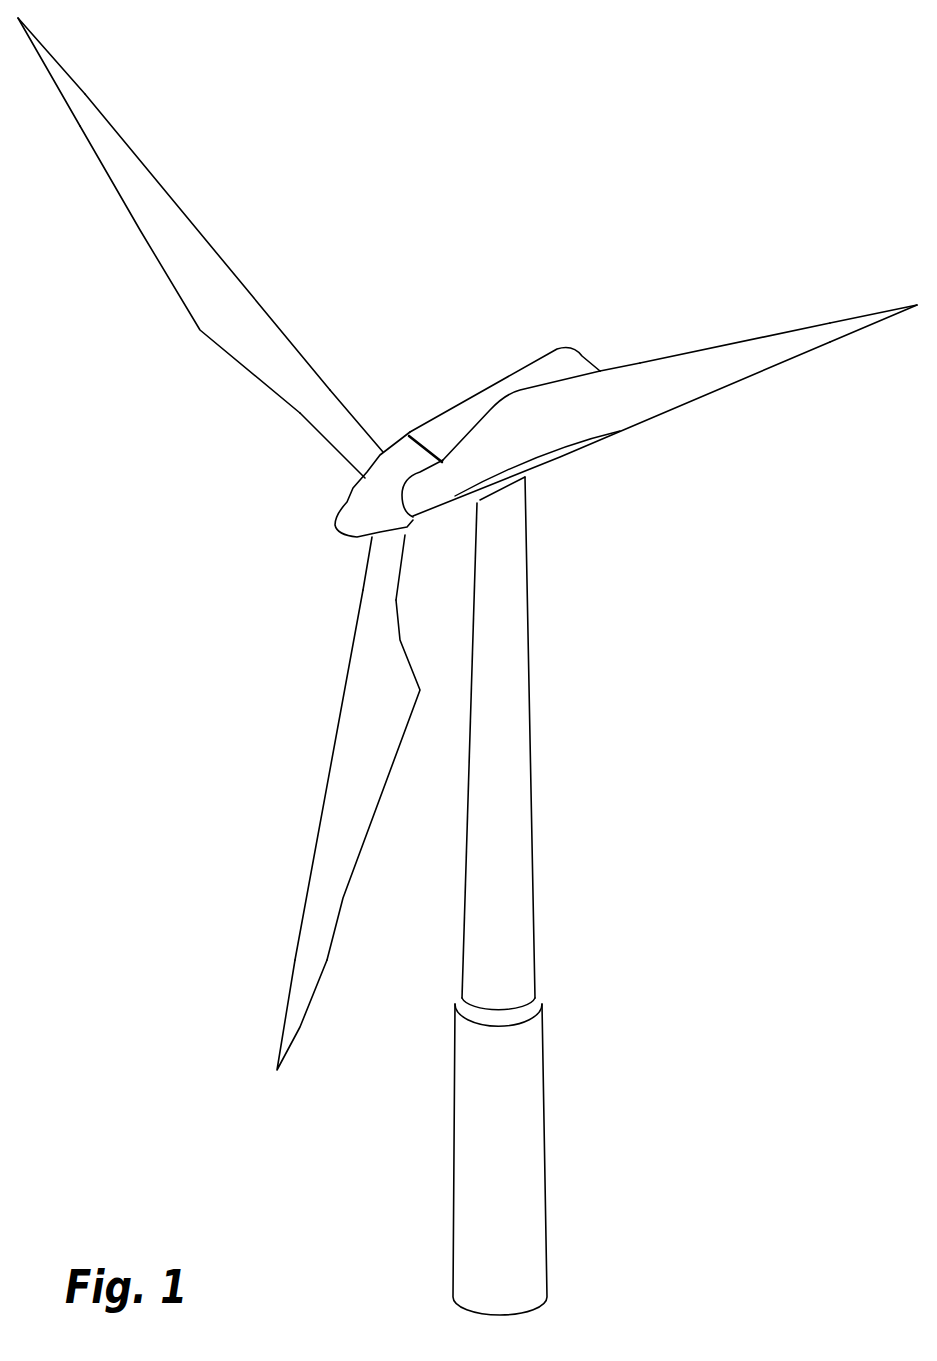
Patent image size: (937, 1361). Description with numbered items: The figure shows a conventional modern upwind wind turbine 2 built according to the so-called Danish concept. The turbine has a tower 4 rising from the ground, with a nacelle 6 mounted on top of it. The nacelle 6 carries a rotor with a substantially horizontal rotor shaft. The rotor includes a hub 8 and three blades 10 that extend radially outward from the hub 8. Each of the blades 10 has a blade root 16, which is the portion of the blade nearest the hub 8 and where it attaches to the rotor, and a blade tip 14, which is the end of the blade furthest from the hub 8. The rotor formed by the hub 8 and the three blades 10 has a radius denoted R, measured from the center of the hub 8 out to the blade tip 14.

The wind turbine 2 is at (633, 829).
The tower 4 is at (517, 743).
The nacelle 6 is at (457, 416).
The hub 8 is at (357, 509).
The blades 10 is at (237, 345).
The blade tip 14 is at (66, 84).
The blade root 16 is at (369, 458).